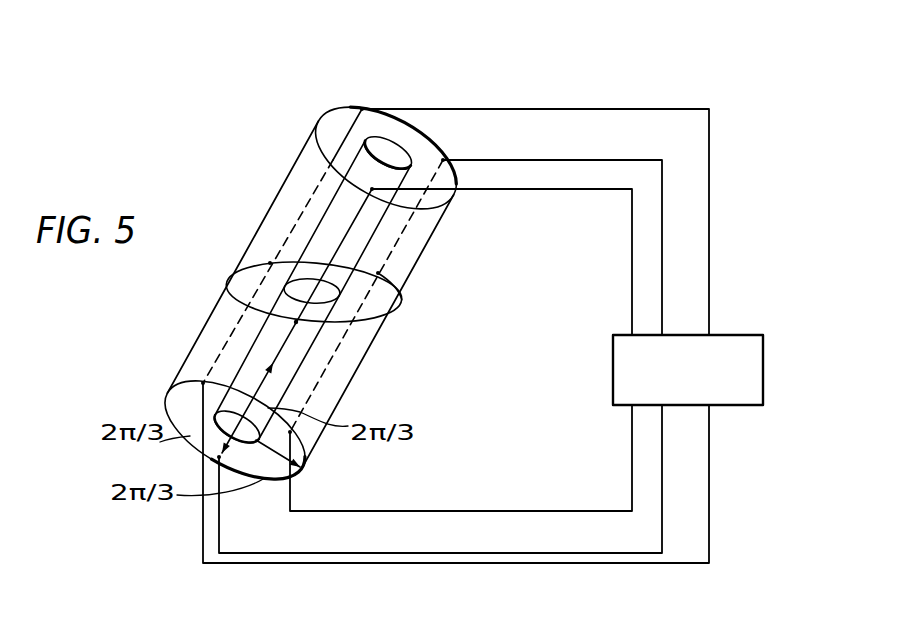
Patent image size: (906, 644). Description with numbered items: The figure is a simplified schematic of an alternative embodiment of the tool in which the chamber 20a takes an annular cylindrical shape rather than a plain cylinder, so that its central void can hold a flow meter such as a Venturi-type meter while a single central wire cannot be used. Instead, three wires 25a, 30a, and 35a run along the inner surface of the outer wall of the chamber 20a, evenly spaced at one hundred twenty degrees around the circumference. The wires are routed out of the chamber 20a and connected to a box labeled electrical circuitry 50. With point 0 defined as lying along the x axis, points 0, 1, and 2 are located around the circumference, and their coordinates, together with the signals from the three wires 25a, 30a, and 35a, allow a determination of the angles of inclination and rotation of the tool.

The wire 30a is at (341, 134).
The wire 25a is at (457, 189).
The chamber 20a is at (408, 278).
The wire 35a is at (342, 237).
The point 2 is at (270, 263).
The point 1 is at (401, 301).
The point 0 is at (296, 322).
The electrical circuitry 50 is at (728, 335).